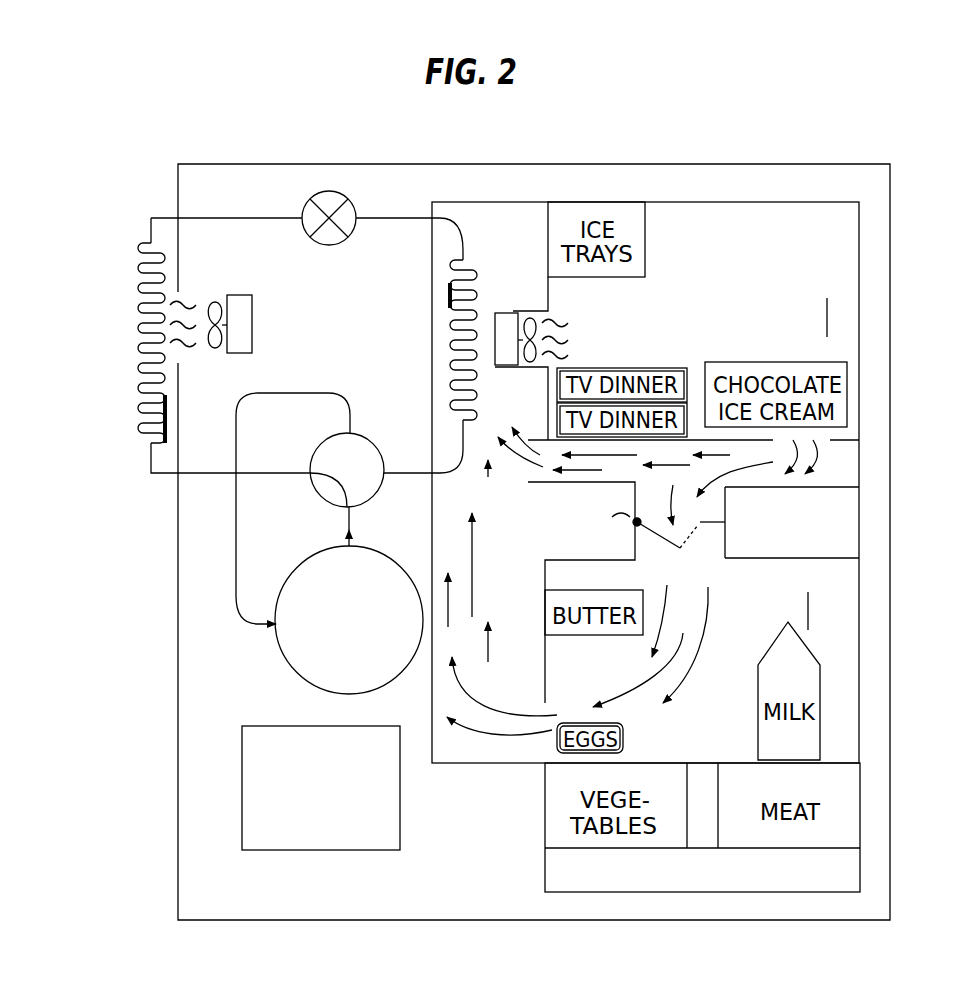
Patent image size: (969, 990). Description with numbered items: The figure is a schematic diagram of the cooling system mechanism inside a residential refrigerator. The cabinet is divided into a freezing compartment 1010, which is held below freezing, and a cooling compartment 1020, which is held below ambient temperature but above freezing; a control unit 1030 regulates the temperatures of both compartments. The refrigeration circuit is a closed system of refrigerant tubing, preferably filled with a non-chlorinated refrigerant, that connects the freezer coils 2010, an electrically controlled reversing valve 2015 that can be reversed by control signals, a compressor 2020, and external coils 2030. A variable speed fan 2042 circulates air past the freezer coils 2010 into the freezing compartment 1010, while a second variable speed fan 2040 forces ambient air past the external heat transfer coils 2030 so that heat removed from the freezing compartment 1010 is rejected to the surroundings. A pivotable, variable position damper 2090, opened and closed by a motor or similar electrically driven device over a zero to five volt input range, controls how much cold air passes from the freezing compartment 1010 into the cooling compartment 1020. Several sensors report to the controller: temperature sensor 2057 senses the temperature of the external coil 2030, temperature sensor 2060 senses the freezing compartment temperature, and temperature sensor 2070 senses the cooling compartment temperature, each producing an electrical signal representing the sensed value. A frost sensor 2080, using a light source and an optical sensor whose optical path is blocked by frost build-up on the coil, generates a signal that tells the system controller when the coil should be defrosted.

The freezing compartment 1010 is at (732, 201).
The cooling compartment 1020 is at (543, 667).
The control unit 1030 is at (400, 826).
The freezer coils 2010 is at (480, 272).
The reversing valve 2015 is at (317, 440).
The compressor 2020 is at (293, 669).
The external coils 2030 is at (138, 297).
The fan 2040 is at (235, 295).
The fan 2042 is at (508, 367).
The temperature sensor 2057 is at (163, 410).
The temperature sensor 2060 is at (827, 313).
The temperature sensor 2070 is at (807, 602).
The frost sensor 2080 is at (430, 297).
The variable position damper 2090 is at (630, 520).